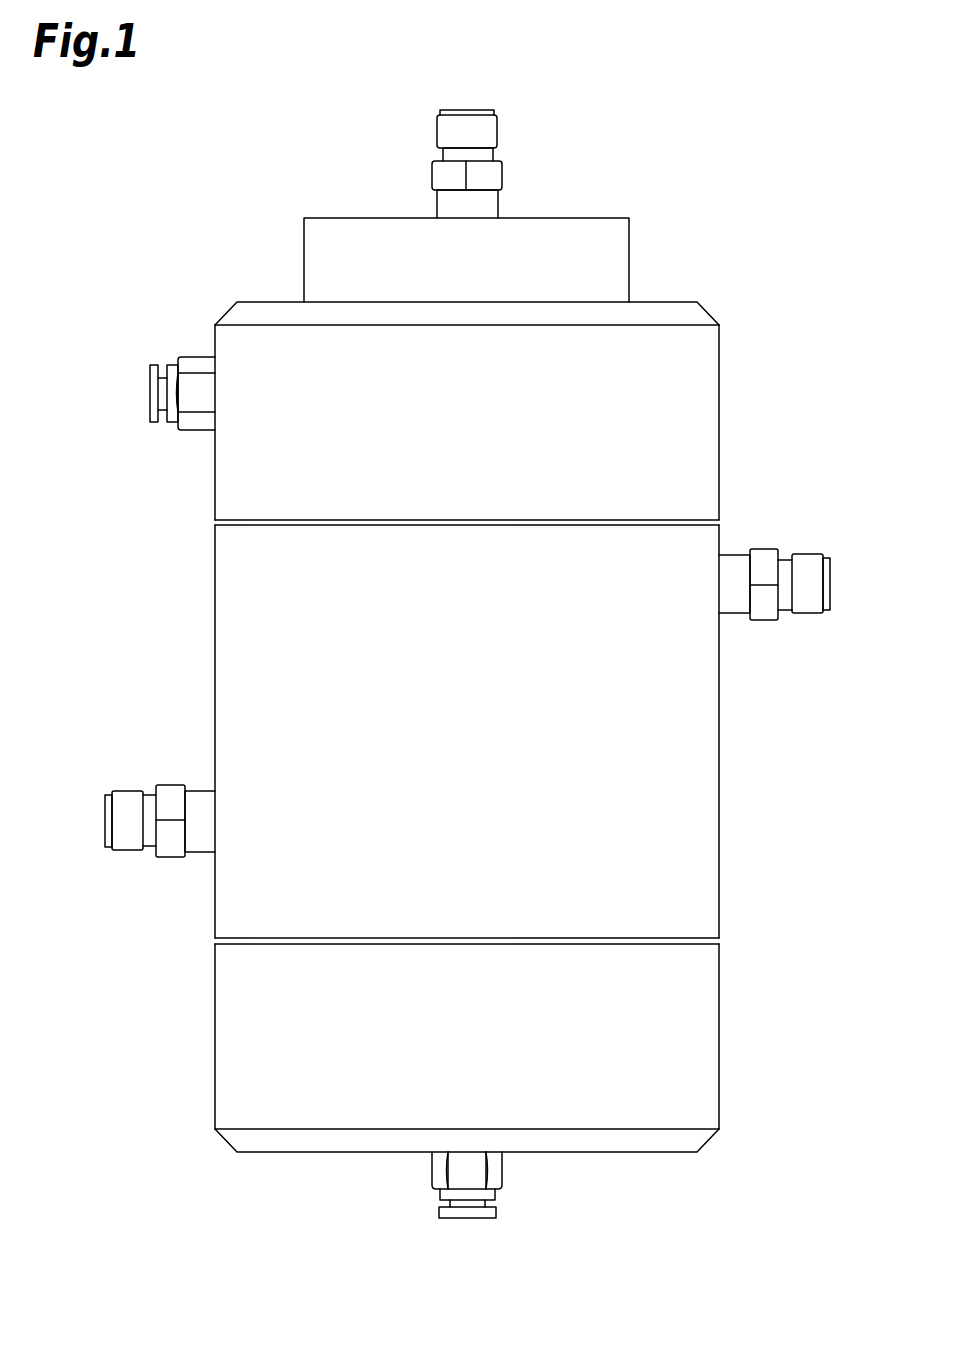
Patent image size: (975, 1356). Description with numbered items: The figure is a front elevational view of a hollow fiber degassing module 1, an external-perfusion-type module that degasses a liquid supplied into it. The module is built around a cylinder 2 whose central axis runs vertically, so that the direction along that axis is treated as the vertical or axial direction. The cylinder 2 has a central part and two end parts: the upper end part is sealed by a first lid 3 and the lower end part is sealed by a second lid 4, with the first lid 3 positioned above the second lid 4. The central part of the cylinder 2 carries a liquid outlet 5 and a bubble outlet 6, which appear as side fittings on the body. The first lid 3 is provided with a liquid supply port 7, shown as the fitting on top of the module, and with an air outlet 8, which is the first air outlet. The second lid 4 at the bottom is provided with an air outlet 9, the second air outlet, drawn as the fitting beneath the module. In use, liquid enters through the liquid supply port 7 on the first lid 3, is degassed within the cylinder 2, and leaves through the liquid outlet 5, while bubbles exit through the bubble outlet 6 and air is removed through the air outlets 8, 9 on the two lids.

The hollow fiber degassing module 1 is at (818, 156).
The cylinder 2 is at (702, 775).
The first lid 3 is at (703, 381).
The second lid 4 is at (702, 1028).
The liquid outlet 5 is at (150, 792).
The bubble outlet 6 is at (764, 563).
The liquid supply port 7 is at (518, 195).
The air outlet (first air outlet) 8 is at (163, 372).
The air outlet (second air outlet) 9 is at (484, 1205).